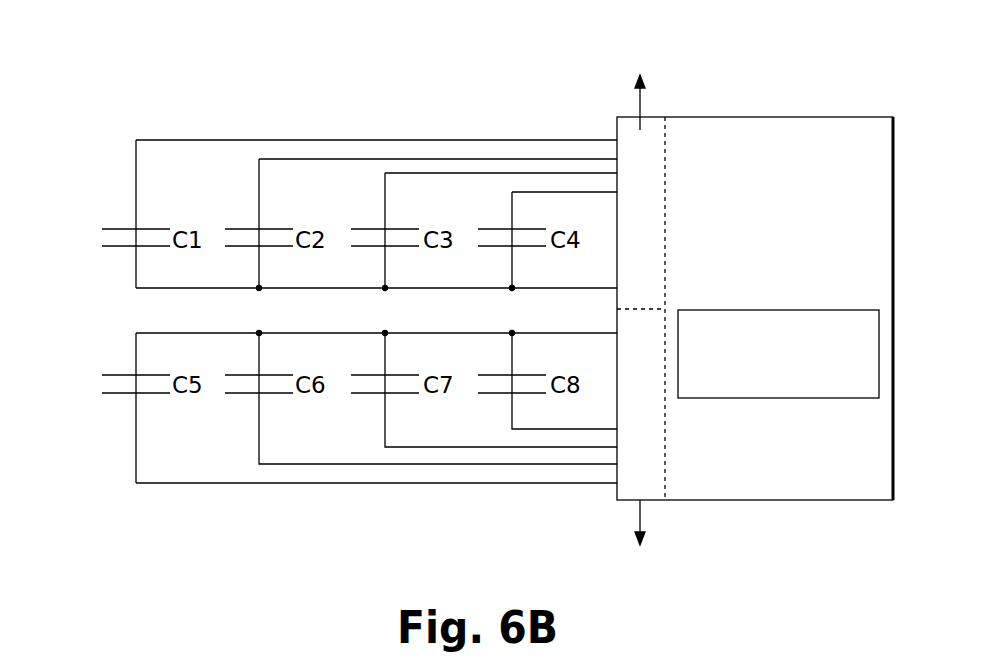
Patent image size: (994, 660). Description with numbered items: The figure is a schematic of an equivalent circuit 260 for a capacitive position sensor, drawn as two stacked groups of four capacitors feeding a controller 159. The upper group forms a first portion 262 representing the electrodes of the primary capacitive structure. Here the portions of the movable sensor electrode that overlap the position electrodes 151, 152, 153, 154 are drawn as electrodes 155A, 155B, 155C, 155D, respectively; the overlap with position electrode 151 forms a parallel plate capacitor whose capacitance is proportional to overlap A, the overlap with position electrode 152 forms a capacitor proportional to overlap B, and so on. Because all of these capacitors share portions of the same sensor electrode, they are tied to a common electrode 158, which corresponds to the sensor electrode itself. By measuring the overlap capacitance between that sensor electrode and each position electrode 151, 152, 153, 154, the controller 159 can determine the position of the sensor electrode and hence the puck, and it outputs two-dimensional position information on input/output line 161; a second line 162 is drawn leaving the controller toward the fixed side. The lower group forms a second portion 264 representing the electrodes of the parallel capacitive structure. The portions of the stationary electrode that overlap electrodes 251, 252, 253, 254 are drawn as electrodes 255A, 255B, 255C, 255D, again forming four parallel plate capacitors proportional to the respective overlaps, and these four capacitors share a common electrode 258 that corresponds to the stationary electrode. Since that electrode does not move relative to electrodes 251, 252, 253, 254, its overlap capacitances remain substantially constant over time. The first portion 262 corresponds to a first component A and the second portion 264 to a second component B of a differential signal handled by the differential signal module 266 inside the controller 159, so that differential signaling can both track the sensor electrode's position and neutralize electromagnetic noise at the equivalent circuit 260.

The position electrode 151 is at (123, 247).
The position electrode 152 is at (245, 247).
The position electrode 153 is at (370, 247).
The position electrode 154 is at (500, 247).
The electrode 155A is at (121, 229).
The electrode 155B is at (245, 229).
The electrode 155C is at (370, 229).
The electrode 155D is at (500, 229).
The common electrode 158 is at (535, 290).
The controller 159 is at (779, 257).
The input/output line 161 is at (717, 89).
The fixed signal 162 is at (693, 539).
The electrode 251 is at (122, 375).
The electrode 252 is at (245, 375).
The electrode 253 is at (370, 375).
The electrode 254 is at (498, 375).
The electrode 255A is at (123, 393).
The electrode 255B is at (245, 393).
The electrode 255C is at (370, 393).
The electrode 255D is at (500, 393).
The common electrode 258 is at (593, 334).
The equivalent circuit 260 is at (426, 96).
The first portion 262 is at (221, 134).
The second portion 264 is at (289, 490).
The differential signal module 266 is at (778, 399).